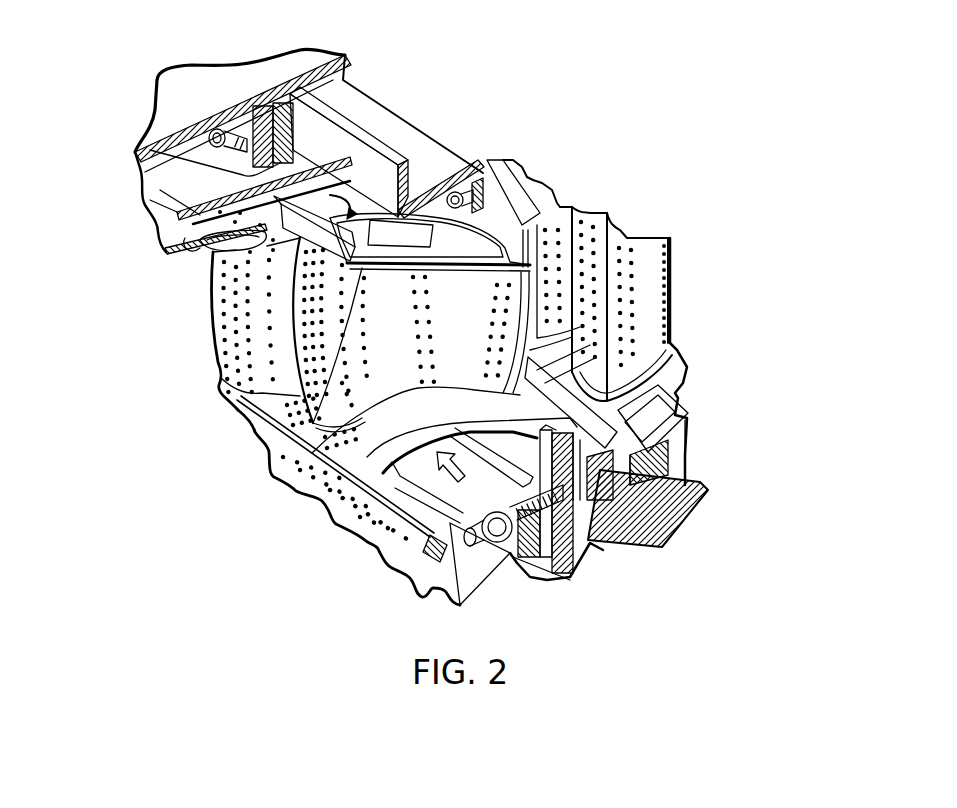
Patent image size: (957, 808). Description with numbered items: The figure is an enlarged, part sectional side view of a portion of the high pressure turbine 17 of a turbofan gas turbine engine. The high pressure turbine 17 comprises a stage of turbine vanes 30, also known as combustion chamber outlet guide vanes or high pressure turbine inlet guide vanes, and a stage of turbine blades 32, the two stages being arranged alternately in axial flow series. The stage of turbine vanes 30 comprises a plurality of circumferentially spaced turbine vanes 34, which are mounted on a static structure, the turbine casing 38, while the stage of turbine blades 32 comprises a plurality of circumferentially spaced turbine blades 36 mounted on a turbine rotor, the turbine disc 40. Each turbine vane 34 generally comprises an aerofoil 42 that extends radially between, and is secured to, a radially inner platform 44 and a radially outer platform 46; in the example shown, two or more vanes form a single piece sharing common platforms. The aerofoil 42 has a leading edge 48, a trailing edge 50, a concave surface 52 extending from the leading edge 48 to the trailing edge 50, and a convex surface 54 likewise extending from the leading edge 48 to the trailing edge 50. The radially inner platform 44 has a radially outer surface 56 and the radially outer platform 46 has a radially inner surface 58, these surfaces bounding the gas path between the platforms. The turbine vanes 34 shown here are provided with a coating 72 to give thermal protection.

The high pressure turbine 17 is at (283, 470).
The stage of turbine vanes 30 is at (288, 381).
The stage of turbine blades 32 is at (679, 252).
The turbine vane 34 is at (288, 348).
The turbine blade 36 is at (617, 225).
The turbine casing 38 is at (165, 190).
The turbine disc 40 is at (670, 518).
The aerofoil 42 is at (372, 433).
The radially inner platform 44 is at (398, 366).
The radially outer platform 46 is at (290, 405).
The leading edge 48 is at (288, 361).
The trailing edge 50 is at (530, 355).
The concave surface 52 is at (467, 300).
The convex surface 54 is at (293, 300).
The radially outer surface 56 is at (432, 411).
The radially inner surface 58 is at (330, 478).
The coating 72 is at (393, 285).